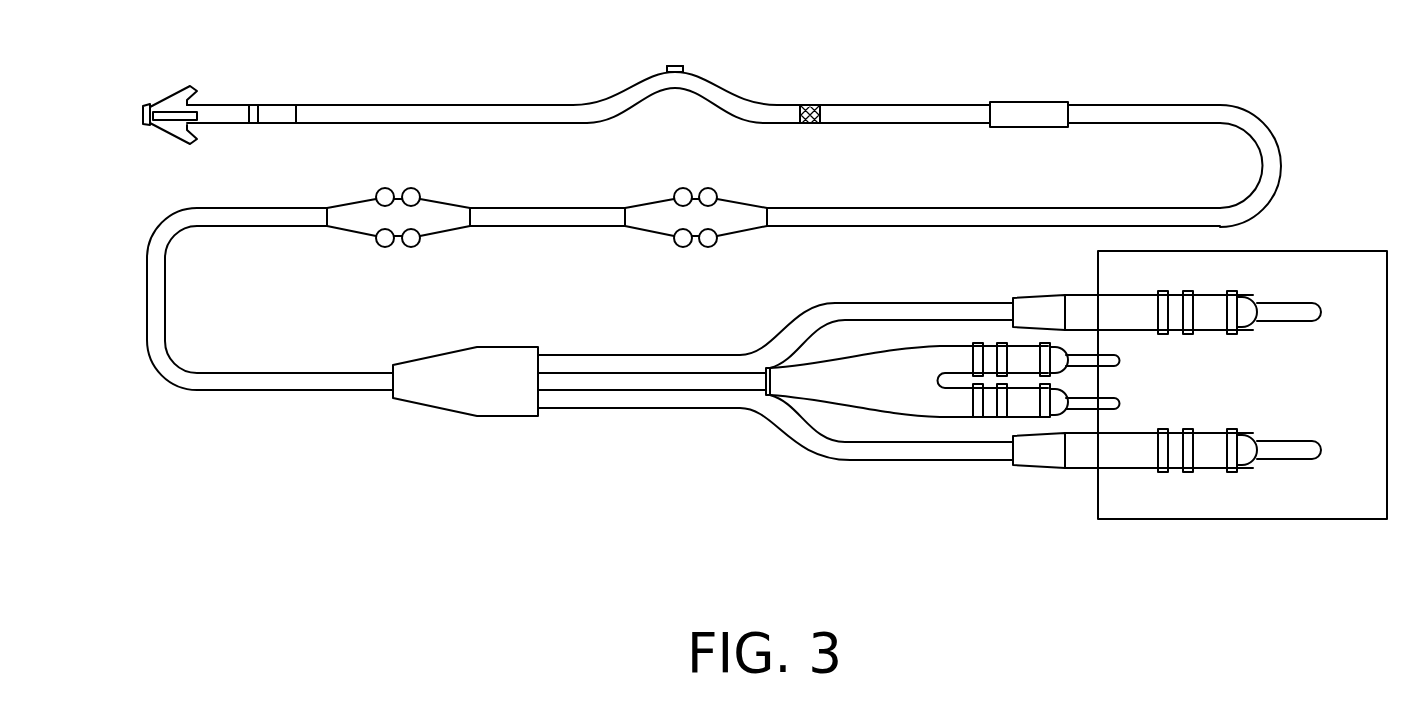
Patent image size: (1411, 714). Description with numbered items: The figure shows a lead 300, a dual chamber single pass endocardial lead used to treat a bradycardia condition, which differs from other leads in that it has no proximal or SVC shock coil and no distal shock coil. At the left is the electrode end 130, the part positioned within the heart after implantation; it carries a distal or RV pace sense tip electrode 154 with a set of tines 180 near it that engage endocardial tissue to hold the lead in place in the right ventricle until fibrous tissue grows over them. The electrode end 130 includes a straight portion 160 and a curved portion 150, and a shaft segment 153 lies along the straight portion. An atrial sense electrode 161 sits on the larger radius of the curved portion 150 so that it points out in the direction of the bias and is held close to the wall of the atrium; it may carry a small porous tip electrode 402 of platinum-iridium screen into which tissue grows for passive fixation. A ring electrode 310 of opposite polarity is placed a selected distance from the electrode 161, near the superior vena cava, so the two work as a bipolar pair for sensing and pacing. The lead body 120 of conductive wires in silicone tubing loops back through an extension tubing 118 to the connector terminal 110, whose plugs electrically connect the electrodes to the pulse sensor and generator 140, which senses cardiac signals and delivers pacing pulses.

The lead 300 is at (337, 535).
The tines 180 is at (192, 87).
The distal tip electrode 154 is at (143, 110).
The shaft segment 153 is at (323, 105).
The straight portion 160 is at (370, 127).
The electrode end 130 is at (460, 105).
The curved portion 150 is at (717, 80).
The atrial sense electrode 161 is at (673, 66).
The porous tip electrode 402 is at (668, 68).
The ring electrode 310 is at (810, 104).
The lead body 120 is at (1277, 177).
The extension tubing 118 is at (958, 228).
The connector terminal 110 is at (852, 450).
The pulse sensor and generator 140 is at (1262, 512).